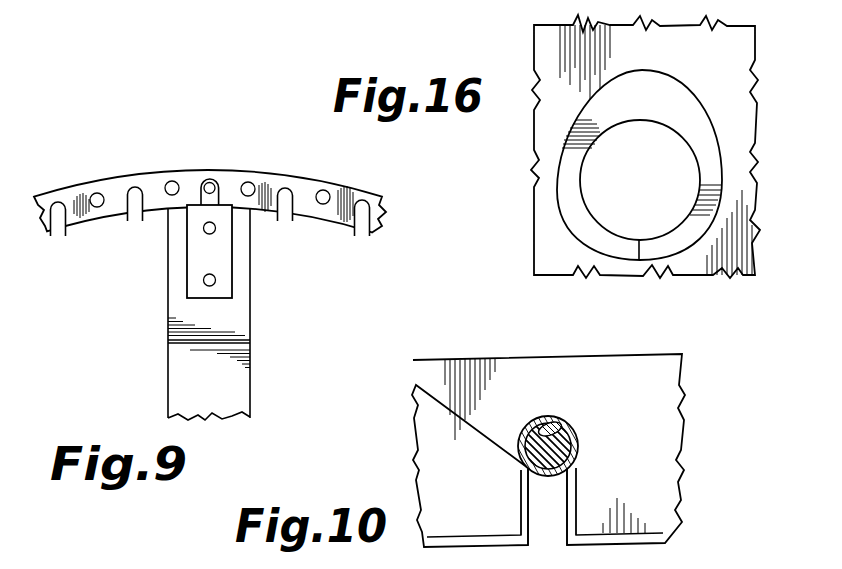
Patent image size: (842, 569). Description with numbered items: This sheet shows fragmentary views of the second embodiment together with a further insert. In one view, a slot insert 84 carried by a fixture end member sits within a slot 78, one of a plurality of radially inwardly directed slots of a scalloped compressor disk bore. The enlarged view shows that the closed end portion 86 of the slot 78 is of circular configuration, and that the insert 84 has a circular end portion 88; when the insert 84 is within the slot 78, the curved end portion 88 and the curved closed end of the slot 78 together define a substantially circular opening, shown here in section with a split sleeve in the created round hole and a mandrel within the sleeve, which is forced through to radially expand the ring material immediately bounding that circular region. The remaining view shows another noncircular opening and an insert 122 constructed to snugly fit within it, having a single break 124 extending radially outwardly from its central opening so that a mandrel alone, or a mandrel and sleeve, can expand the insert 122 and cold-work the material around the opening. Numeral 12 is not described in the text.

In FIG. 16, the panel 12 is at (552, 53).
In FIG. 16, the insert 122 is at (565, 130).
In FIG. 16, the single break 124 is at (652, 245).
In FIG. 10, the closed end portion 86 is at (566, 424).
In FIG. 10, the slot insert 84 is at (540, 488).
In FIG. 10, the circular end portion 88 is at (552, 482).
In FIG. 10, the slot 78 is at (523, 503).